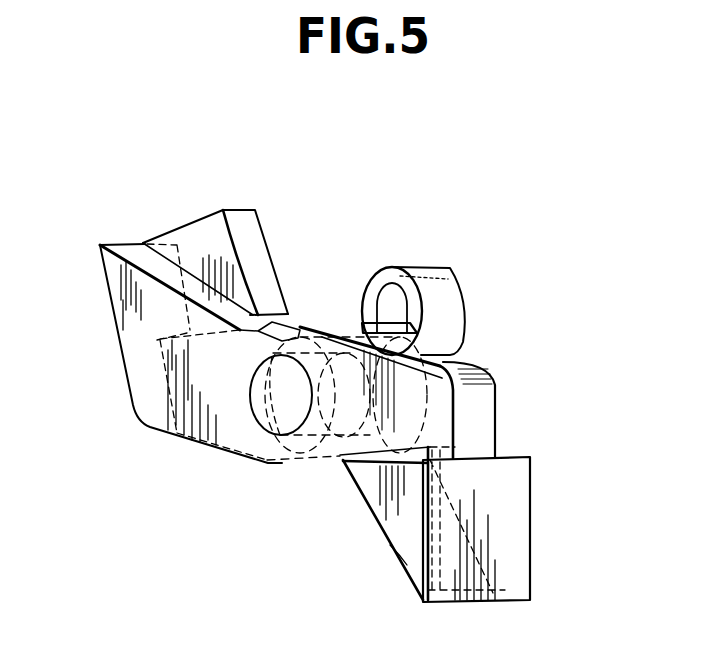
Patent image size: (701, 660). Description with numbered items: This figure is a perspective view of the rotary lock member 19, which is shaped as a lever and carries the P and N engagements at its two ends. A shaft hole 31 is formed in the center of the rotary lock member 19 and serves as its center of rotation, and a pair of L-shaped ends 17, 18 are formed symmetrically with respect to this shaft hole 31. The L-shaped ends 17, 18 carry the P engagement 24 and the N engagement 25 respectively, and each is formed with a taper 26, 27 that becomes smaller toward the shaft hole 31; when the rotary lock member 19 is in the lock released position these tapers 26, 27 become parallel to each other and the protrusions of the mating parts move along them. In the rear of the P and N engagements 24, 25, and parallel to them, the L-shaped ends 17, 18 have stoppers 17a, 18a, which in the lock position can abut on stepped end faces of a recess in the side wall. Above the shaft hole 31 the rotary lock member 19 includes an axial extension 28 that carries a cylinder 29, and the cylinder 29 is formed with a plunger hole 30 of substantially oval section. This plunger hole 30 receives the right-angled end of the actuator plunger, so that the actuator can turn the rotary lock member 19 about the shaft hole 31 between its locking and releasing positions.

The L-shaped end 17 is at (200, 258).
The stopper 17a is at (252, 258).
The L-shaped end 18 is at (413, 580).
The stopper 18a is at (407, 565).
The rotary lock member 19 is at (353, 230).
The P engagement 24 is at (117, 325).
The N engagement 25 is at (510, 557).
The taper 26 is at (128, 250).
The taper 27 is at (370, 507).
The axial extension 28 is at (356, 325).
The cylinder 29 is at (450, 313).
The plunger hole 30 is at (390, 303).
The shaft hole 31 is at (280, 435).